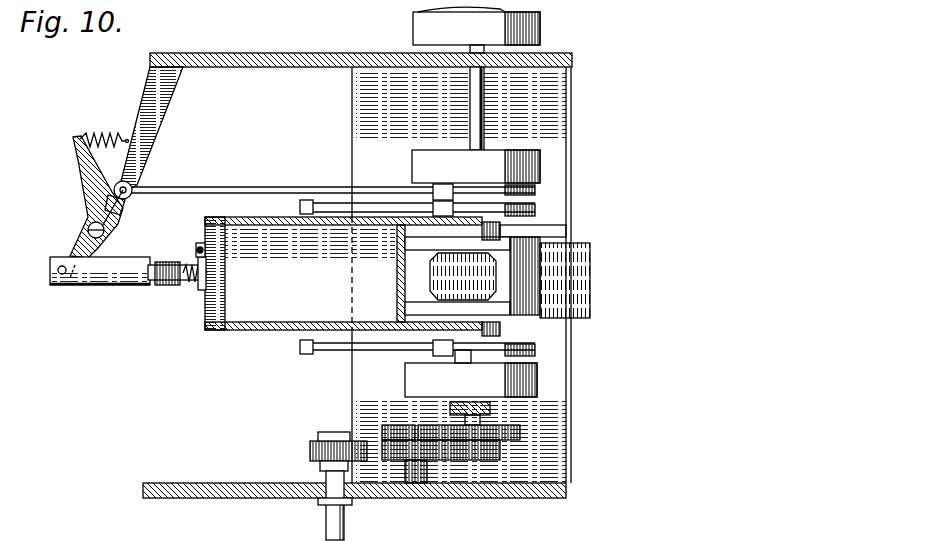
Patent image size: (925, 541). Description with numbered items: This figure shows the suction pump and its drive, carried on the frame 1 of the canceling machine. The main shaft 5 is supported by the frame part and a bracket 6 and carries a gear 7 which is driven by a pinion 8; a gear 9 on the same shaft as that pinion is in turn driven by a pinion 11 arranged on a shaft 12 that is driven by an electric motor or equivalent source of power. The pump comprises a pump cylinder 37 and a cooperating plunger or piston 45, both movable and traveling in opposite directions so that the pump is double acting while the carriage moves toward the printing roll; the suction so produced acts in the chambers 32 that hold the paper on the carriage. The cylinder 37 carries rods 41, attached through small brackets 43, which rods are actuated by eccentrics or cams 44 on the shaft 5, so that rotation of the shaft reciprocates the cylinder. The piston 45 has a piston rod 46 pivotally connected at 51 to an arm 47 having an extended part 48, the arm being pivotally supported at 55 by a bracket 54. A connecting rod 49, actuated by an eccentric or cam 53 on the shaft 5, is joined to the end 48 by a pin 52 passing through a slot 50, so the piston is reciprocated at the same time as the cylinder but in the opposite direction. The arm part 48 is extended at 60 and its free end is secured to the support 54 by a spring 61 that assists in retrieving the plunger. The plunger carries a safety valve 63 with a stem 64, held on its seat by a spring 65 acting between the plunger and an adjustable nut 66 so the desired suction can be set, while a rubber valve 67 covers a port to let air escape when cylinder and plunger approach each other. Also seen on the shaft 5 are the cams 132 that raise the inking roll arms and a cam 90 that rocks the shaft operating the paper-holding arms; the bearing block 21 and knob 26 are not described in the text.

The frame 1 is at (566, 490).
The shaft 5 is at (470, 130).
The bracket 6 is at (450, 408).
The gear 7 is at (512, 428).
The pinion 8 is at (385, 440).
The gear 9 is at (310, 452).
The pinion 11 is at (322, 432).
The shaft 12 is at (326, 522).
The bearing block 21 is at (528, 146).
The knob 26 is at (542, 40).
The chamber 32 is at (460, 355).
The pump cylinder 37 is at (272, 331).
The rod 41 is at (370, 203).
The bracket 43 is at (303, 200).
The eccentric or cam 44 is at (540, 212).
The piston 45 is at (220, 305).
The piston rod 46 is at (112, 286).
The arm 47 is at (86, 233).
The extended part 48 is at (122, 207).
The connecting rod 49 is at (238, 193).
The slot 50 is at (113, 215).
The pivot 51 is at (62, 283).
The pin 52 is at (134, 185).
The eccentric or cam 53 is at (535, 192).
The bracket 54 is at (172, 106).
The pivot 55 is at (88, 220).
The extension 60 is at (78, 163).
The spring 61 is at (104, 126).
The valve 63 is at (210, 283).
The stem 64 is at (150, 288).
The spring 65 is at (187, 290).
The adjustable nut 66 is at (160, 287).
The valve 67 is at (198, 242).
The cam 90 is at (428, 9).
The cam 132 is at (515, 233).